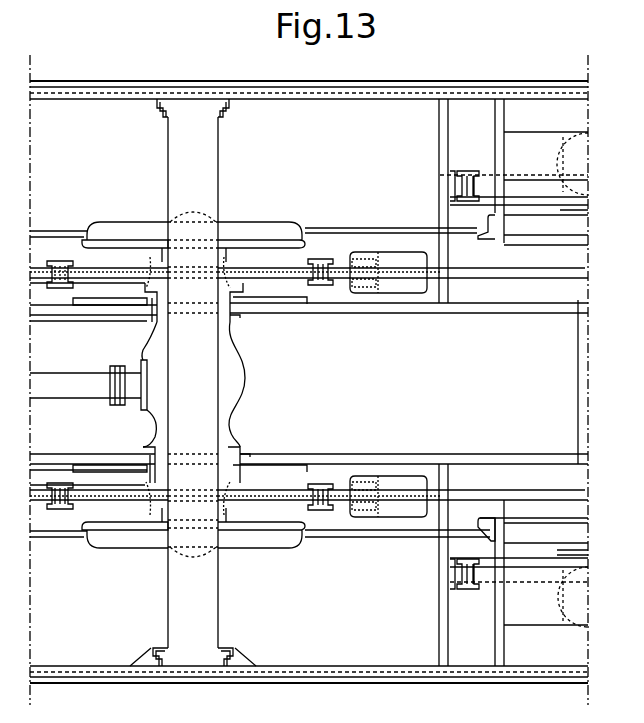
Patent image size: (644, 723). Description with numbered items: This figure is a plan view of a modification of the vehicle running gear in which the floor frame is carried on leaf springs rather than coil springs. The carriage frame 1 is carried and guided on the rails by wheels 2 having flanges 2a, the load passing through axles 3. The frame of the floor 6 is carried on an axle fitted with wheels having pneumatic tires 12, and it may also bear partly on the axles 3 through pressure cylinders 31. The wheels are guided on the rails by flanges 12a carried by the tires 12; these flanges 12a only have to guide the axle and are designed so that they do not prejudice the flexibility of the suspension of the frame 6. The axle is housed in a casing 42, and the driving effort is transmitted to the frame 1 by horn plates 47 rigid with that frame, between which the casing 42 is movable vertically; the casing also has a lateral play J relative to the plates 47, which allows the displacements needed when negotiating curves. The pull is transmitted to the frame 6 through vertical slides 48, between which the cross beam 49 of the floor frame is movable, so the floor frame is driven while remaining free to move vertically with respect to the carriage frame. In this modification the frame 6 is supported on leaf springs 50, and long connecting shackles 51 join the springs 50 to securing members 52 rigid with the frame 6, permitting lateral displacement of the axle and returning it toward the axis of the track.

The carriage frame 1 is at (470, 302).
The wheels 2 is at (510, 527).
The flanges 2a is at (543, 520).
The axles 3 is at (562, 605).
The floor frame 6 is at (465, 276).
The pneumatic tires 12 is at (258, 230).
The flanges 12a is at (106, 242).
The pressure cylinders 31 is at (556, 164).
The casing 42 is at (243, 399).
The horn plates 47 is at (258, 466).
The vertical slides 48 is at (128, 96).
The cross beam 49 is at (252, 96).
The leaf springs 50 is at (297, 282).
The connecting shackles 51 is at (340, 273).
The securing members 52 is at (408, 288).
The lateral play J is at (151, 297).